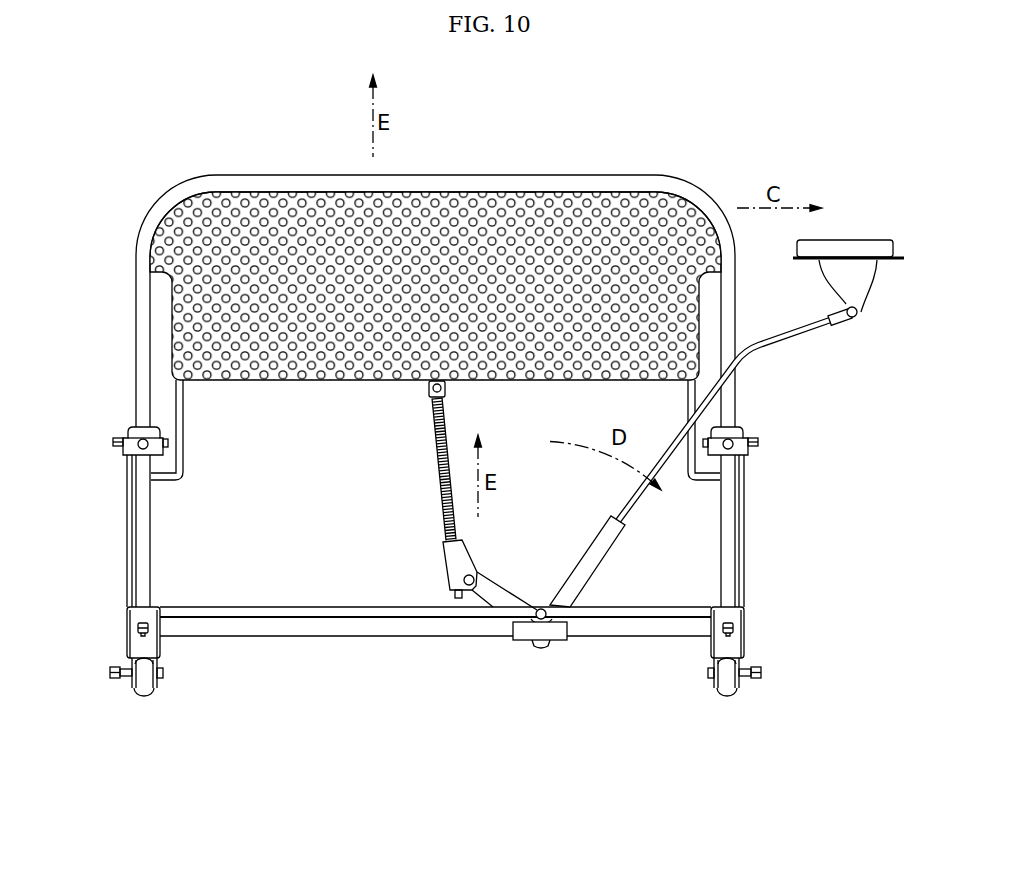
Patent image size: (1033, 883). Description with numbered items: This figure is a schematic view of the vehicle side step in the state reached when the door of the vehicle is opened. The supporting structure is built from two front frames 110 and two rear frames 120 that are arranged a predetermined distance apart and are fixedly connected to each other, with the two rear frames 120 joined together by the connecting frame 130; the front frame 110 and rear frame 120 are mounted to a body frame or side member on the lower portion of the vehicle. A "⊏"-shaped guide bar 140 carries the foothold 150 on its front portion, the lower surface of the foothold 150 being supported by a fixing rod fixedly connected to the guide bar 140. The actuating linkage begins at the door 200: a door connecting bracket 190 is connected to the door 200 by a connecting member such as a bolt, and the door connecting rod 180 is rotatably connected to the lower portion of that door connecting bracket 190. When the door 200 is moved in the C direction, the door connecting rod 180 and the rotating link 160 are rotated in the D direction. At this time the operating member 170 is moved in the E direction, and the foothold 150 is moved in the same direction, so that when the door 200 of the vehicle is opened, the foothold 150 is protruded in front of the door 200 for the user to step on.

The front frame 110 is at (118, 465).
The rear frame 120 is at (138, 642).
The connecting frame 130 is at (232, 649).
The guide bar 140 is at (127, 297).
The foothold 150 is at (512, 205).
The rotating link 160 is at (601, 585).
The operating member 170 is at (426, 465).
The door connecting rod 180 is at (804, 348).
The door connecting bracket 190 is at (858, 278).
The door 200 is at (852, 249).